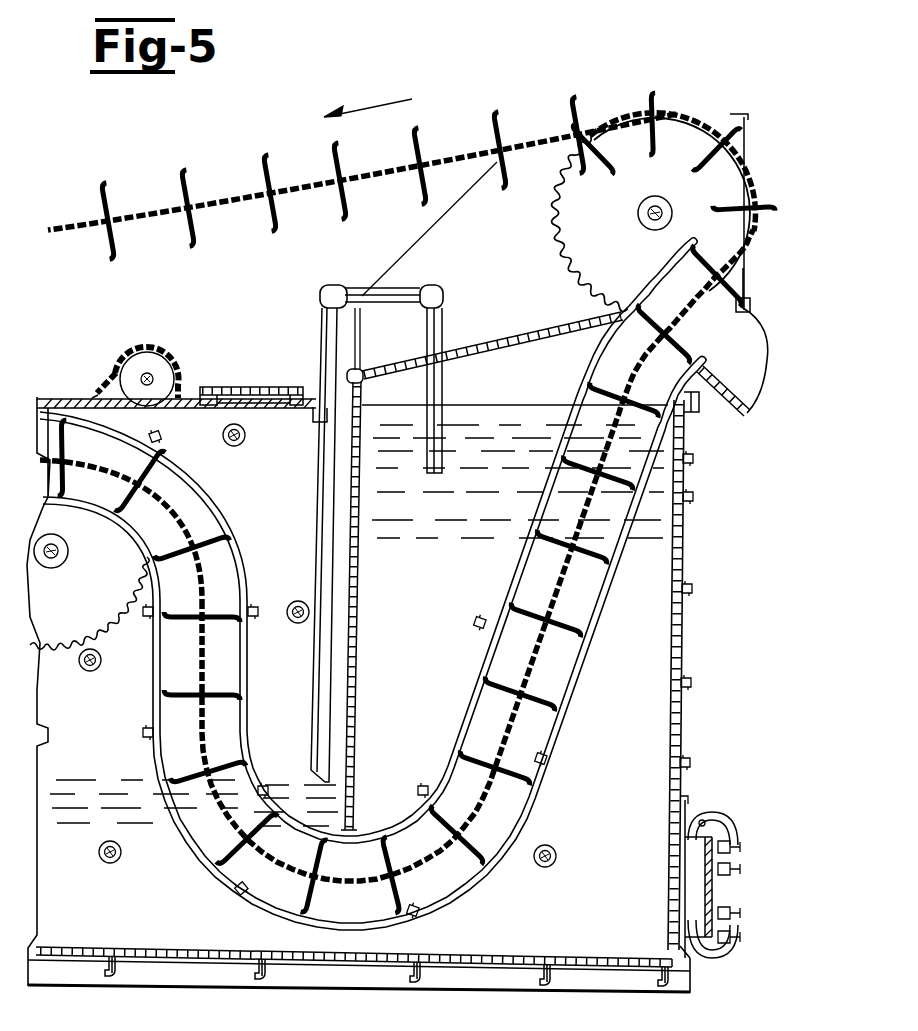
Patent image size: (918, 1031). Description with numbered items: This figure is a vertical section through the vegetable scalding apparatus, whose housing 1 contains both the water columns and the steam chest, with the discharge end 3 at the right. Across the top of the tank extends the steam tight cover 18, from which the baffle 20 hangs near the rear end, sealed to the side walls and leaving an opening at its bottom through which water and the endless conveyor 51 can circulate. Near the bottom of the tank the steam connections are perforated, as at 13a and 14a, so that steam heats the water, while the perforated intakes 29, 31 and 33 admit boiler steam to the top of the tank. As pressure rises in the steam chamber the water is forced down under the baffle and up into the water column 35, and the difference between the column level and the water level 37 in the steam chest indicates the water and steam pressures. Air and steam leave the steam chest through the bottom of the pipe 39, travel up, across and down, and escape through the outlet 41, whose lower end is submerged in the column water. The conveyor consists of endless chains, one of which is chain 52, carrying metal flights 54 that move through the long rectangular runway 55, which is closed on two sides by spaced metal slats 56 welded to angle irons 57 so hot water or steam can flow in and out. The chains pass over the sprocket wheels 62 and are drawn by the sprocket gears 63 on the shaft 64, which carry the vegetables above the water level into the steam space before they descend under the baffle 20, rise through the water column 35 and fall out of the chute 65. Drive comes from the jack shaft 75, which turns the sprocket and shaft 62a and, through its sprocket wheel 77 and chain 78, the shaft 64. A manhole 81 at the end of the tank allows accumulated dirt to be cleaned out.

The housing 1 is at (681, 536).
The discharge end 3 is at (683, 643).
The perforations 13a is at (110, 864).
The perforations 14a is at (558, 863).
The steam tight cover 18 is at (180, 405).
The baffle 20 is at (356, 598).
The steam intake 29 is at (246, 435).
The steam intake 31 is at (297, 625).
The steam intake 33 is at (96, 672).
The water column 35 is at (447, 557).
The water level 37 is at (84, 778).
The pipe 39 is at (318, 703).
The outlet 41 is at (442, 465).
The endless conveyor 51 is at (149, 208).
The endless chain 52 is at (218, 192).
The metal flight 54 is at (265, 180).
The runway 55 is at (585, 676).
The metal slat 56 is at (520, 562).
The angle iron 57 is at (486, 624).
The sprocket wheel 62 is at (627, 212).
The sprocket and shaft 62a is at (648, 221).
The sprocket gear 63 is at (118, 635).
The shaft 64 is at (65, 560).
The chute 65 is at (748, 380).
The jack shaft 75 is at (171, 359).
The sprocket wheel 77 is at (165, 378).
The chain 78 is at (105, 383).
The manhole 81 is at (712, 894).